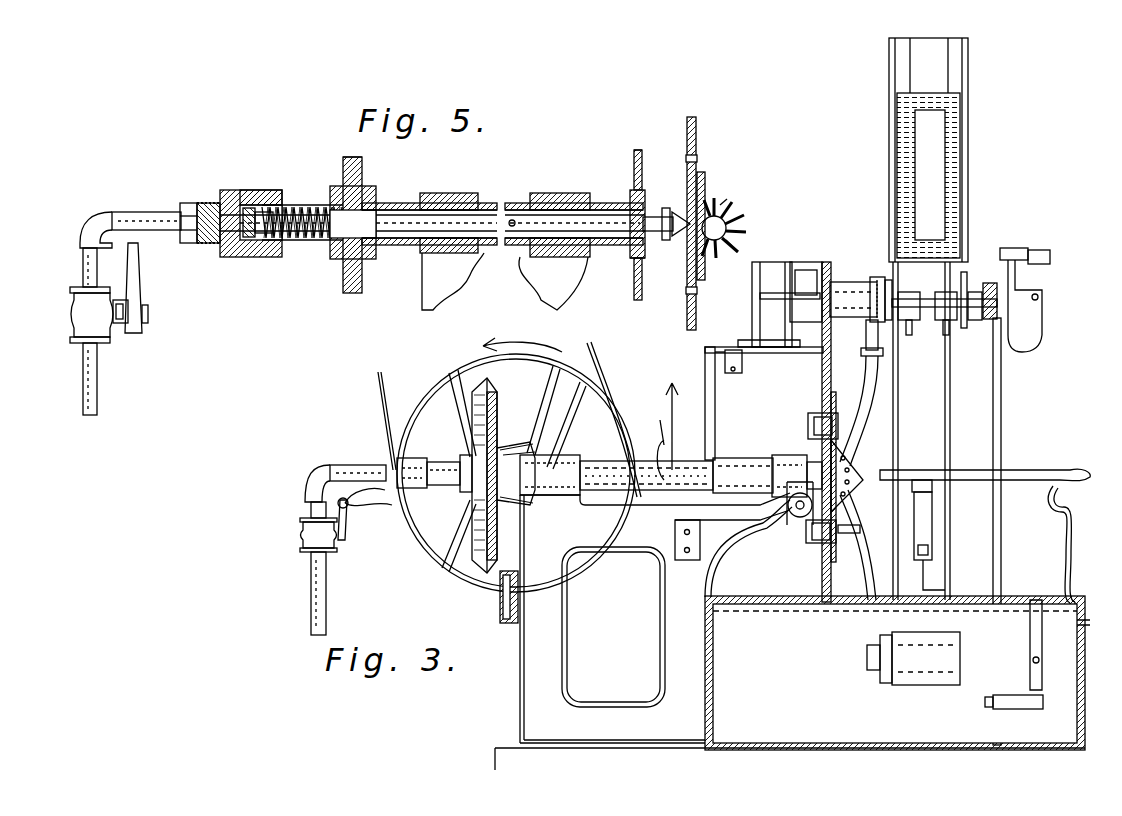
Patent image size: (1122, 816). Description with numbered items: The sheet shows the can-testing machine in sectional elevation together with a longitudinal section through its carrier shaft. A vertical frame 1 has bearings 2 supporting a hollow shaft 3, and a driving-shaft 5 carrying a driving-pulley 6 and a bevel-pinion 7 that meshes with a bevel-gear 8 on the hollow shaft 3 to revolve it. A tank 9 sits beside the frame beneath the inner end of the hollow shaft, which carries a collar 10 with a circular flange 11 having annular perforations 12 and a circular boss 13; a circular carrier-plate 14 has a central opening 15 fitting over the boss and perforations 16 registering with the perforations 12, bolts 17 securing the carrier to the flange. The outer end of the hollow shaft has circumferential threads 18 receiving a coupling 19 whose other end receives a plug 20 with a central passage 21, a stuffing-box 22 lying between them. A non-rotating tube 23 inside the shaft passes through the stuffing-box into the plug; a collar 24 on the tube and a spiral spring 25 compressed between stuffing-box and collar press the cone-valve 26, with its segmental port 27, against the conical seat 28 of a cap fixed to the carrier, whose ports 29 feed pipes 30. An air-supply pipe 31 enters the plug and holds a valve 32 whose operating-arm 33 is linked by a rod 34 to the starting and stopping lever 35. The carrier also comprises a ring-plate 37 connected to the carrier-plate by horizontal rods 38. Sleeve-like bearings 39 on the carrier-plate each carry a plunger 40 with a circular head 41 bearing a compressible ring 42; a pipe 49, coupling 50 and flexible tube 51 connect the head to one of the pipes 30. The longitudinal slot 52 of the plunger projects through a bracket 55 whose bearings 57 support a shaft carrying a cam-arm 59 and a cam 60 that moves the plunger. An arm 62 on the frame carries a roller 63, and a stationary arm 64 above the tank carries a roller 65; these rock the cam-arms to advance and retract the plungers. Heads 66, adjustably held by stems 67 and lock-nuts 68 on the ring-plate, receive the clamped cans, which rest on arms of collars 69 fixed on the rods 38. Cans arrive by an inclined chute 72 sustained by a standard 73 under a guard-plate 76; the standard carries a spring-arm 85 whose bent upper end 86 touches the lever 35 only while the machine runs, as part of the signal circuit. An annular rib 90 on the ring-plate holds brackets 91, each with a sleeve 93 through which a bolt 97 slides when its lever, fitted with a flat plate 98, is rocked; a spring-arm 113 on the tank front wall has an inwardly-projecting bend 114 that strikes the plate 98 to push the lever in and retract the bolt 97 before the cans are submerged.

In FIG. 5, the vertical frame 1 is at (540, 284).
In FIG. 3, the vertical frame 1 is at (680, 620).
In FIG. 5, the bearings 2 is at (443, 195).
In FIG. 3, the bearings 2 is at (558, 496).
In FIG. 5, the hollow shaft 3 is at (412, 246).
In FIG. 3, the hollow shaft 3 is at (590, 465).
In FIG. 3, the driving-shaft 5 is at (455, 477).
In FIG. 3, the driving-pulley 6 is at (560, 364).
In FIG. 3, the bevel-pinion 7 is at (536, 455).
In FIG. 5, the bevel-gear 8 is at (350, 294).
In FIG. 3, the bevel-gear 8 is at (497, 418).
In FIG. 3, the tank 9 is at (895, 673).
In FIG. 5, the collar 10 is at (630, 262).
In FIG. 3, the collar 10 is at (790, 458).
In FIG. 5, the circular flange 11 is at (633, 155).
In FIG. 3, the circular flange 11 is at (815, 532).
In FIG. 5, the annular perforations 12 is at (633, 164).
In FIG. 5, the circular boss 13 is at (645, 195).
In FIG. 5, the circular carrier-plate 14 is at (698, 136).
In FIG. 3, the circular carrier-plate 14 is at (822, 368).
In FIG. 5, the central opening 15 is at (700, 286).
In FIG. 5, the perforations 16 is at (698, 159).
In FIG. 3, the bolts 17 is at (810, 425).
In FIG. 5, the circumferential threads 18 is at (292, 204).
In FIG. 5, the coupling 19 is at (262, 200).
In FIG. 3, the coupling 19 is at (440, 458).
In FIG. 5, the plug 20 is at (222, 252).
In FIG. 5, the central passage 21 is at (200, 207).
In FIG. 5, the stuffing-box 22 is at (252, 258).
In FIG. 5, the tube 23 is at (396, 215).
In FIG. 5, the collar 24 is at (345, 192).
In FIG. 5, the spiral spring 25 is at (293, 248).
In FIG. 5, the cone-valve 26 is at (676, 220).
In FIG. 5, the segmental port 27 is at (666, 246).
In FIG. 5, the conical seat 28 is at (731, 222).
In FIG. 5, the ports 29 is at (727, 236).
In FIG. 3, the ports 29 is at (852, 478).
In FIG. 5, the pipe 30 is at (724, 205).
In FIG. 5, the air-supply pipe 31 is at (158, 215).
In FIG. 3, the air-supply pipe 31 is at (368, 463).
In FIG. 5, the valve 32 is at (91, 315).
In FIG. 5, the operating-arm 33 is at (143, 300).
In FIG. 3, the operating-arm 33 is at (348, 520).
In FIG. 3, the rod 34 is at (303, 487).
In FIG. 3, the lever 35 is at (943, 455).
In FIG. 3, the ring-plate 37 is at (1003, 441).
In FIG. 3, the horizontal rods 38 is at (932, 298).
In FIG. 3, the tubular bearings 39 is at (850, 290).
In FIG. 3, the plunger 40 is at (872, 672).
In FIG. 3, the circular head 41 is at (890, 683).
In FIG. 3, the compressible ring 42 is at (885, 330).
In FIG. 3, the pipe 49 is at (866, 336).
In FIG. 3, the coupling 50 is at (867, 357).
In FIG. 3, the flexible tube 51 is at (870, 412).
In FIG. 3, the longitudinal slot 52 is at (300, 531).
In FIG. 3, the bracket 55 is at (808, 270).
In FIG. 3, the bearing 57 is at (755, 281).
In FIG. 3, the cam-arm 59 is at (790, 350).
In FIG. 3, the cam 60 is at (745, 658).
In FIG. 3, the arm 62 is at (705, 403).
In FIG. 3, the roller 63 is at (735, 375).
In FIG. 3, the stationary arm 64 is at (740, 518).
In FIG. 3, the roller 65 is at (795, 516).
In FIG. 3, the heads 66 is at (967, 278).
In FIG. 3, the stems 67 is at (978, 322).
In FIG. 3, the lock-nuts 68 is at (991, 326).
In FIG. 3, the collars 69 is at (937, 322).
In FIG. 3, the inclined chute 72 is at (889, 136).
In FIG. 3, the standard 73 is at (952, 462).
In FIG. 3, the guard-plate 76 is at (930, 200).
In FIG. 3, the spring-arm 85 is at (930, 526).
In FIG. 3, the upper end 86 is at (926, 490).
In FIG. 3, the annular rib 90 is at (1040, 300).
In FIG. 3, the brackets 91 is at (1017, 340).
In FIG. 3, the sleeve 93 is at (1015, 710).
In FIG. 3, the bolt 97 is at (989, 708).
In FIG. 3, the flat plate 98 is at (1042, 650).
In FIG. 3, the spring-arm 113 is at (1066, 556).
In FIG. 3, the inwardly-projecting bend 114 is at (1050, 502).